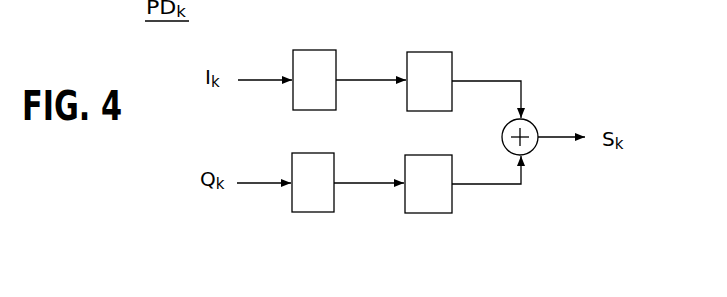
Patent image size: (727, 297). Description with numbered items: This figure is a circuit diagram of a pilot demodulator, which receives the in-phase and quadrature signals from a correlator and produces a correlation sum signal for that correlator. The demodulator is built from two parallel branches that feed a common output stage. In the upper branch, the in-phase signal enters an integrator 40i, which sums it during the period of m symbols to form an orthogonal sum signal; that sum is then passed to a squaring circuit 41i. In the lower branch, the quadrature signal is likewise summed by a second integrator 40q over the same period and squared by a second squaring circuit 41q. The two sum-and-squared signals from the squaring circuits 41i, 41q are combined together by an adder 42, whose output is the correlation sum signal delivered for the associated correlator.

The integrator 40i is at (312, 50).
The squaring circuit 41i is at (432, 52).
The integrator 40q is at (313, 212).
The squaring circuit 41q is at (423, 213).
The adder 42 is at (531, 128).